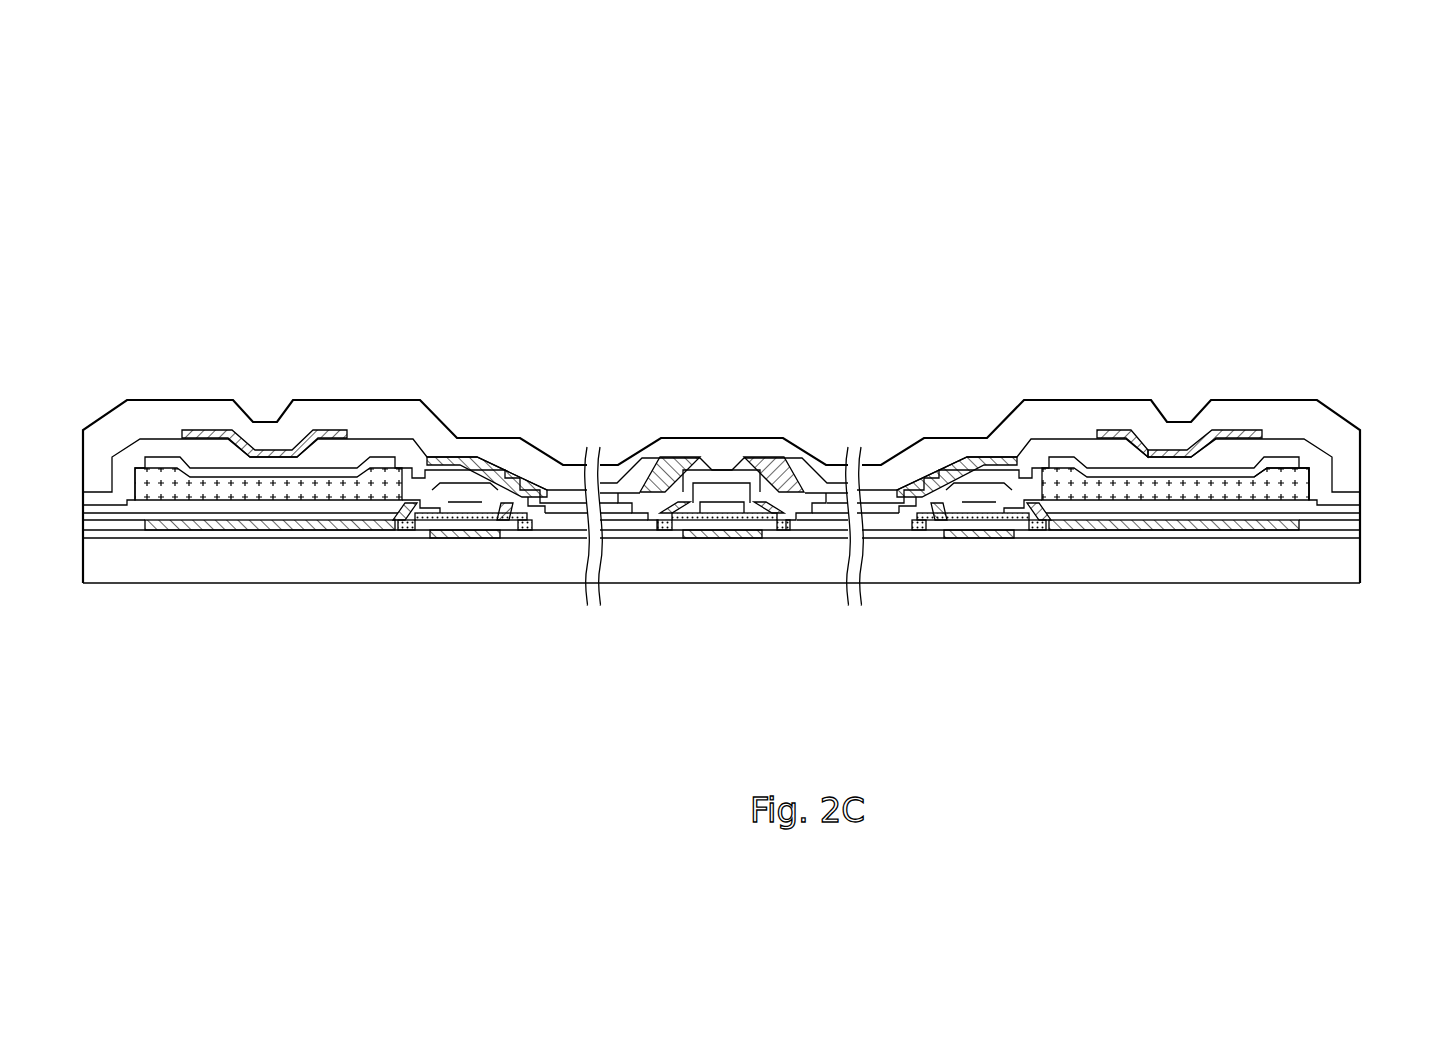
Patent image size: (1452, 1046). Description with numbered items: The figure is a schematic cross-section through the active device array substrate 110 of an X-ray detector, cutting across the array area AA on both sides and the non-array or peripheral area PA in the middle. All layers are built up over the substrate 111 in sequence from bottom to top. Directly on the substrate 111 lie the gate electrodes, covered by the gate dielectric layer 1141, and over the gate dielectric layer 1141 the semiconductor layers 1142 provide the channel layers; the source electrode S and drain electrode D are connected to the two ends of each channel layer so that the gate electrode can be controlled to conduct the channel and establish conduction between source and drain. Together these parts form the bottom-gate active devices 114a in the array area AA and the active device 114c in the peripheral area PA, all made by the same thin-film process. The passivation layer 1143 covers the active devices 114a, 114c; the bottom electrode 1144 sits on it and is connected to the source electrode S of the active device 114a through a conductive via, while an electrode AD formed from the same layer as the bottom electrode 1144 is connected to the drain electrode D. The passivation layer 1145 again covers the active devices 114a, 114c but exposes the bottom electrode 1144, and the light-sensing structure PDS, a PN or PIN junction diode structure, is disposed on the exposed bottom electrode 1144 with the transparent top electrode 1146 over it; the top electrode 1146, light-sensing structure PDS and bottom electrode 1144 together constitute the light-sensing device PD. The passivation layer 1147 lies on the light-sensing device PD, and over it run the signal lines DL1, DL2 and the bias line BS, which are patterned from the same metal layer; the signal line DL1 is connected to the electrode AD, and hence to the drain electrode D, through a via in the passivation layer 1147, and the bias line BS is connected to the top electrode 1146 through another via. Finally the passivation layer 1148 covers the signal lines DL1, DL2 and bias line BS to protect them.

The active device array substrate 110 is at (127, 239).
The substrate 111 is at (1347, 560).
The gate dielectric layer 1141 is at (1352, 535).
The passivation layer 1143 is at (1352, 525).
The passivation layer 1145 is at (1353, 514).
The passivation layer 1147 is at (1327, 477).
The passivation layer 1148 is at (1348, 438).
The semiconductor layer 1142 is at (467, 505).
The bottom electrode 1144 is at (1277, 503).
The top electrode 1146 is at (1141, 467).
The active device 114a is at (401, 327).
The active device 114c is at (726, 327).
The array area AA is at (587, 130).
The non-array area PA is at (847, 130).
The light-sensing device PD is at (1317, 343).
The light-sensing structure PDS is at (1230, 477).
The bias line BS is at (1100, 428).
The signal line DL1 is at (505, 462).
The signal line DL2 is at (913, 465).
The source electrode S is at (393, 523).
The drain electrode D is at (524, 522).
The electrode AD is at (928, 522).